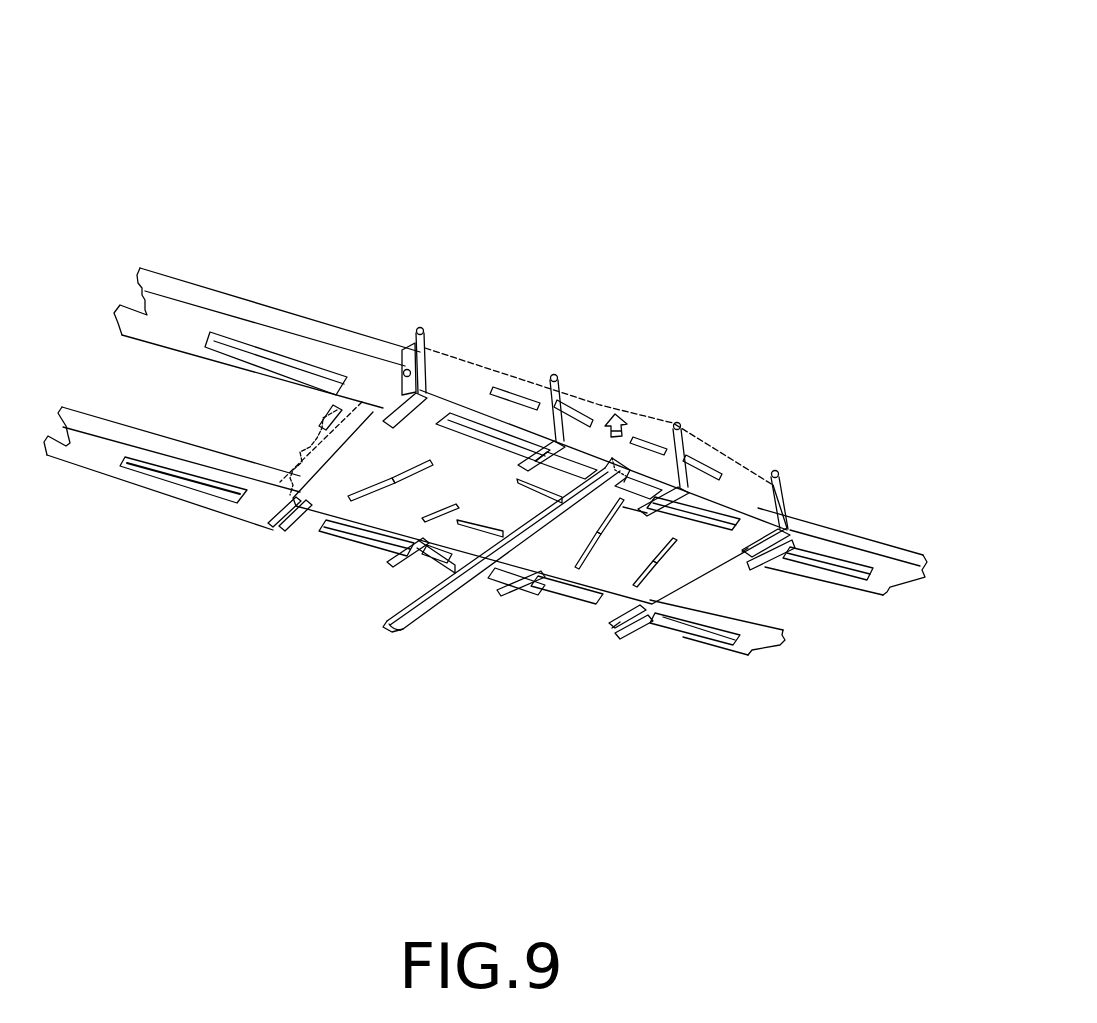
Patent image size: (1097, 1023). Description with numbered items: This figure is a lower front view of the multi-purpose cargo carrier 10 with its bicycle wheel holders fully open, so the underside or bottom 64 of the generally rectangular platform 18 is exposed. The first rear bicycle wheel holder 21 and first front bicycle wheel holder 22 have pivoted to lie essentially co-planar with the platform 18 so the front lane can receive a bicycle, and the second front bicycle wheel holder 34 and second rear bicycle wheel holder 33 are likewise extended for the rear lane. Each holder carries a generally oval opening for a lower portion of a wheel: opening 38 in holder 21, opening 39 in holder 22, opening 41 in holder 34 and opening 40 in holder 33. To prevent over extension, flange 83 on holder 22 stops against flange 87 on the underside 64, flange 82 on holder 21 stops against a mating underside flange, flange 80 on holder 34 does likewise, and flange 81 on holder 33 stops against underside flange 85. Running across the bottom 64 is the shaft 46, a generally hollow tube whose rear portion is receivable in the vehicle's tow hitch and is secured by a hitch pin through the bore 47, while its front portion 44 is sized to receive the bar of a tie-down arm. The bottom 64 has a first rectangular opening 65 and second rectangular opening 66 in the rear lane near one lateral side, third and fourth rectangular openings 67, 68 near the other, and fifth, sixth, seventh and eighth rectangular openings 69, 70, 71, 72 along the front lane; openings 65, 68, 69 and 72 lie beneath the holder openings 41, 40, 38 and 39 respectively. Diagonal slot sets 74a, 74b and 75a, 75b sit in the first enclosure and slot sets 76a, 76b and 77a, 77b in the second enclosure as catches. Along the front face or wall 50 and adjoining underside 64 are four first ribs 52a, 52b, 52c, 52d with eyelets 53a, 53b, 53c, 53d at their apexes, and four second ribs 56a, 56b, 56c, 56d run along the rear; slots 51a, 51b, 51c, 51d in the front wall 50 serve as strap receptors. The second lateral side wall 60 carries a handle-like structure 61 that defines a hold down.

The multi-purpose cargo carrier 10 is at (831, 112).
The platform 18 is at (515, 468).
The first rear bicycle wheel holder 21 is at (163, 282).
The first front bicycle wheel holder 22 is at (895, 560).
The second rear bicycle wheel holder 33 is at (753, 640).
The second front bicycle wheel holder 34 is at (105, 427).
The generally oval opening 38 is at (250, 338).
The generally oval opening 39 is at (840, 563).
The generally oval opening 40 is at (683, 632).
The generally oval opening 41 is at (172, 469).
The portion of the shaft 44 is at (617, 485).
The shaft 46 is at (474, 581).
The bore 47 is at (404, 611).
The front face or wall 50 is at (465, 387).
The slot 51a is at (517, 392).
The slot 51b is at (587, 417).
The slot 51c is at (640, 437).
The slot 51d is at (707, 465).
The first rib 52a is at (416, 335).
The first rib 52b is at (560, 363).
The first rib 52c is at (684, 414).
The first rib 52d is at (798, 474).
The eyelet 53a is at (417, 329).
The eyelet 53b is at (552, 375).
The eyelet 53c is at (676, 424).
The eyelet 53d is at (775, 470).
The second rib 56a is at (295, 512).
The second rib 56b is at (407, 555).
The second rib 56c is at (521, 593).
The second rib 56d is at (616, 618).
The second lateral side wall 60 is at (324, 449).
The handle-like structure 61 is at (336, 413).
The bottom 64 is at (478, 470).
The first rectangular opening 65 is at (353, 528).
The second rectangular opening 66 is at (432, 553).
The third rectangular opening 67 is at (509, 580).
The fourth rectangular opening 68 is at (564, 590).
The fifth rectangular opening 69 is at (477, 426).
The sixth rectangular opening 70 is at (558, 460).
The seventh rectangular opening 71 is at (634, 490).
The eighth rectangular opening 72 is at (697, 508).
The slot of first set 74a is at (385, 485).
The slot of first set 74b is at (425, 465).
The slot of second set 75a is at (457, 511).
The slot of second set 75b is at (523, 493).
The slot of third set 76a is at (580, 560).
The slot of third set 76b is at (598, 526).
The slot of fourth set 77a is at (641, 577).
The slot of fourth set 77b is at (664, 557).
The flange 80 is at (270, 516).
The flange 81 is at (635, 623).
The flange 82 is at (384, 418).
The flange 83 is at (768, 554).
The flange 85 is at (621, 622).
The flange 87 is at (744, 556).